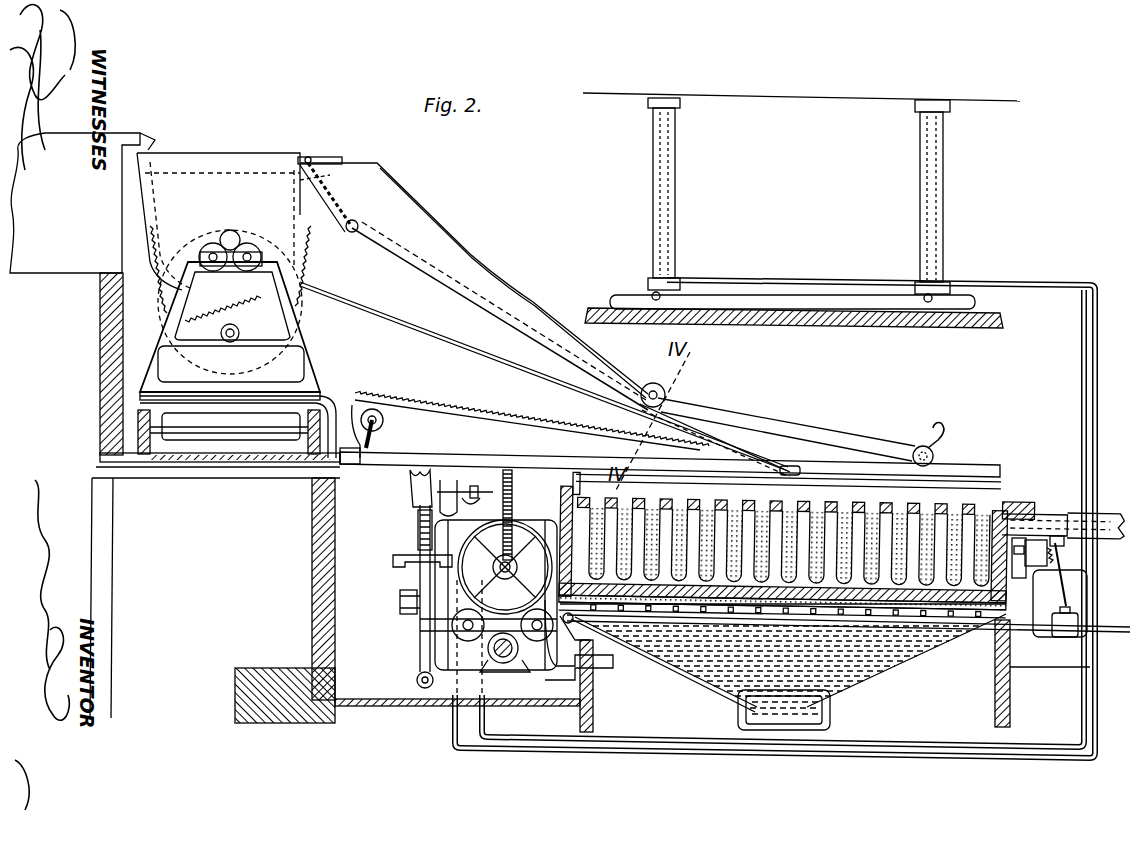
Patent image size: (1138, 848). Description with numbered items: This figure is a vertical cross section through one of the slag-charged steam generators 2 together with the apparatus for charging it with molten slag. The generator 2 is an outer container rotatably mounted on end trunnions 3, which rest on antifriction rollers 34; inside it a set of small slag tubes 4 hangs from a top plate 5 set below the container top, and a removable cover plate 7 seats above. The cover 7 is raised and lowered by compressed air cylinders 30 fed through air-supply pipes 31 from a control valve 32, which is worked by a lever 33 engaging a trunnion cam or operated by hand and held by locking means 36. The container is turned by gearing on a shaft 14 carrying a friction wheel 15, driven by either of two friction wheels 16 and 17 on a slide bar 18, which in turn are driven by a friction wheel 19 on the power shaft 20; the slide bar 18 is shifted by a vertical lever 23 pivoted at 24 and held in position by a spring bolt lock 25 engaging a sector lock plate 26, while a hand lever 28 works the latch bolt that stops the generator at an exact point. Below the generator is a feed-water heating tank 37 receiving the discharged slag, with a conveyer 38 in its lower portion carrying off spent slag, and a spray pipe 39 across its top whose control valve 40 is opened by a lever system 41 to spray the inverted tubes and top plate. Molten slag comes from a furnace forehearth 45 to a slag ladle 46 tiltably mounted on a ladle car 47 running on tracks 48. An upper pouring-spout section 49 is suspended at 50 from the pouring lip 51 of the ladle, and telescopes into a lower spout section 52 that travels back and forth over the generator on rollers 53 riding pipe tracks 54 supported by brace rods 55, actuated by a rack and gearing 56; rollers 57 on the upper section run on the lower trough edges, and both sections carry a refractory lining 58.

The generator 2 is at (688, 583).
The end trunnion 3 is at (1022, 495).
The roller 34 is at (1030, 566).
The slag tube 4 is at (620, 522).
The top plate 5 is at (710, 486).
The cover plate 7 is at (825, 320).
The shaft 14 is at (462, 556).
The friction wheel 15 is at (494, 566).
The friction wheel 16 is at (574, 666).
The friction wheel 17 is at (502, 636).
The slide bar 18 is at (455, 632).
The friction wheel 19 is at (492, 660).
The power shaft 20 is at (504, 664).
The vertical lever 23 is at (422, 610).
The pivot 24 is at (416, 681).
The spring bolt lock 25 is at (418, 524).
The sector lock plate 26 is at (412, 556).
The hand lever 28 is at (400, 591).
The compressed air cylinder 30 is at (650, 225).
The air-supply pipe 31 is at (1096, 420).
The control valve 32 is at (474, 500).
The lever 33 is at (455, 490).
The locking means 36 is at (449, 488).
The feed-water heating tank 37 is at (905, 668).
The conveyer 38 is at (792, 732).
The spray pipe 39 is at (966, 636).
The control valve 40 is at (1064, 636).
The lever system 41 is at (1052, 571).
The furnace forehearth 45 is at (82, 203).
The slag ladle 46 is at (224, 263).
The ladle car 47 is at (257, 390).
The tracks 48 is at (147, 458).
The upper section of pouring spout 49 is at (474, 286).
The suspension 50 is at (345, 215).
The pouring lip 51 is at (332, 157).
The lower section of pouring spout 52 is at (762, 428).
The rollers 53 is at (934, 455).
The pipe tracks 54 is at (560, 457).
The brace rods 55 is at (550, 378).
The rack and gearing 56 is at (384, 421).
The rollers 57 is at (666, 396).
The refractory lining 58 is at (645, 385).